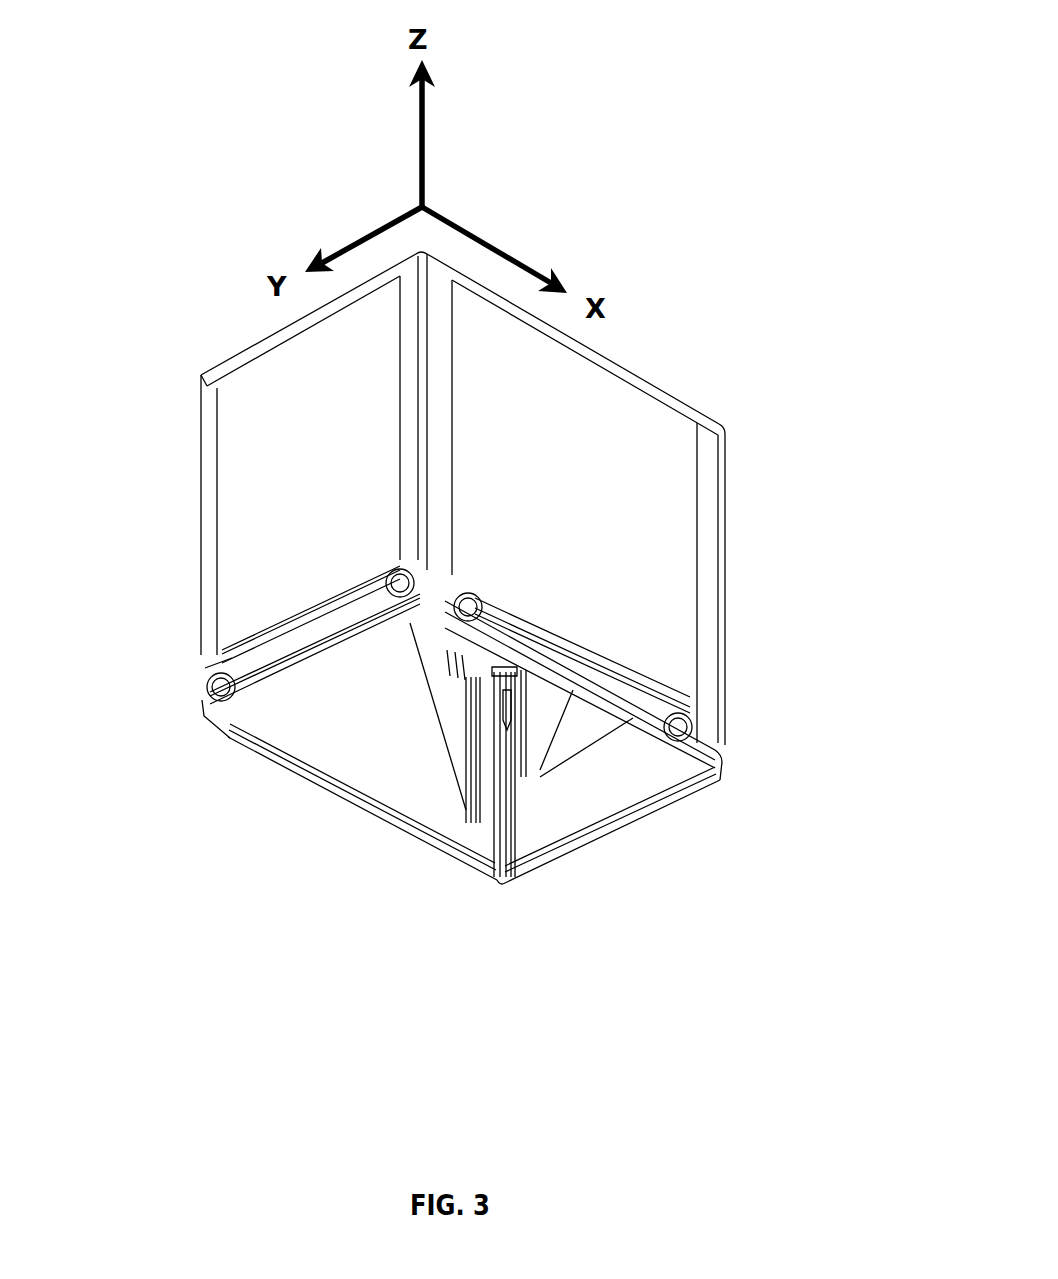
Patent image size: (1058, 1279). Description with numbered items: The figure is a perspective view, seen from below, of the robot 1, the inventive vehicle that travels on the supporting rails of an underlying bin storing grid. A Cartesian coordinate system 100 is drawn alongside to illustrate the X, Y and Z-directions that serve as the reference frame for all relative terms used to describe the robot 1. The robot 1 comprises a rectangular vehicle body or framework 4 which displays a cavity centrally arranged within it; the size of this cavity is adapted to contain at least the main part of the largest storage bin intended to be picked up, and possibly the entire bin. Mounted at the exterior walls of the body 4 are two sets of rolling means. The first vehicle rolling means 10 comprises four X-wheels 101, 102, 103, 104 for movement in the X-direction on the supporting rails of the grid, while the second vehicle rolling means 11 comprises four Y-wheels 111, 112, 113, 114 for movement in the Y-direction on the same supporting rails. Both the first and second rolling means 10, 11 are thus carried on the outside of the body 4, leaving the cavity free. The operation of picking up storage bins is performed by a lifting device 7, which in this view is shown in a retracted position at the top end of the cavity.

The robot 1 is at (670, 202).
The Cartesian coordinate system 100 is at (318, 161).
The vehicle body or framework 4 is at (311, 413).
The lifting device 7 is at (507, 668).
The first vehicle rolling means 10 is at (665, 700).
The second vehicle rolling means 11 is at (368, 554).
The X-wheel 101 is at (683, 724).
The X-wheel 102 is at (467, 596).
The X-wheel 103 is at (472, 868).
The X-wheel 104 is at (243, 748).
The roller 111 is at (398, 583).
The roller 112 is at (222, 687).
The frame corner 113 is at (718, 772).
The frame corner 114 is at (527, 882).